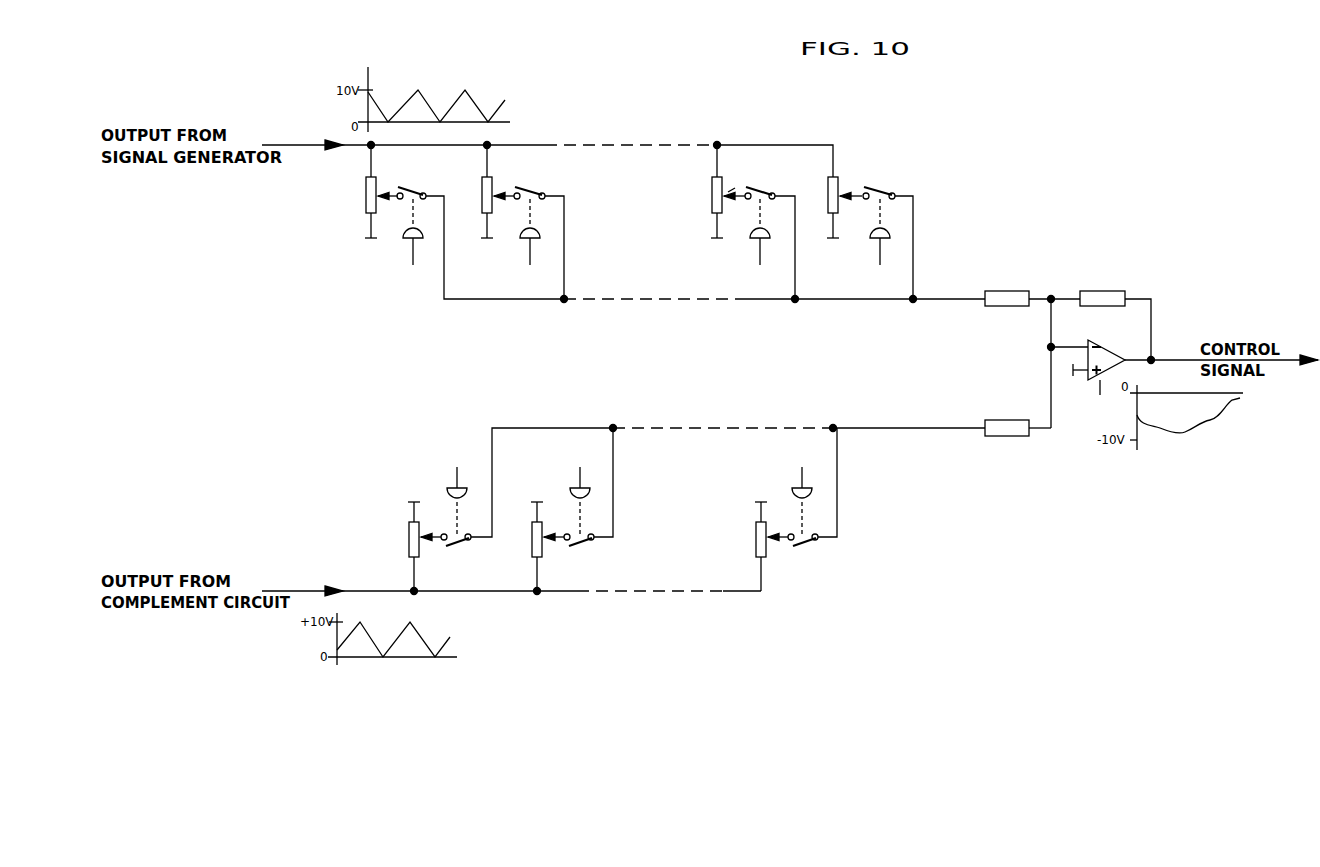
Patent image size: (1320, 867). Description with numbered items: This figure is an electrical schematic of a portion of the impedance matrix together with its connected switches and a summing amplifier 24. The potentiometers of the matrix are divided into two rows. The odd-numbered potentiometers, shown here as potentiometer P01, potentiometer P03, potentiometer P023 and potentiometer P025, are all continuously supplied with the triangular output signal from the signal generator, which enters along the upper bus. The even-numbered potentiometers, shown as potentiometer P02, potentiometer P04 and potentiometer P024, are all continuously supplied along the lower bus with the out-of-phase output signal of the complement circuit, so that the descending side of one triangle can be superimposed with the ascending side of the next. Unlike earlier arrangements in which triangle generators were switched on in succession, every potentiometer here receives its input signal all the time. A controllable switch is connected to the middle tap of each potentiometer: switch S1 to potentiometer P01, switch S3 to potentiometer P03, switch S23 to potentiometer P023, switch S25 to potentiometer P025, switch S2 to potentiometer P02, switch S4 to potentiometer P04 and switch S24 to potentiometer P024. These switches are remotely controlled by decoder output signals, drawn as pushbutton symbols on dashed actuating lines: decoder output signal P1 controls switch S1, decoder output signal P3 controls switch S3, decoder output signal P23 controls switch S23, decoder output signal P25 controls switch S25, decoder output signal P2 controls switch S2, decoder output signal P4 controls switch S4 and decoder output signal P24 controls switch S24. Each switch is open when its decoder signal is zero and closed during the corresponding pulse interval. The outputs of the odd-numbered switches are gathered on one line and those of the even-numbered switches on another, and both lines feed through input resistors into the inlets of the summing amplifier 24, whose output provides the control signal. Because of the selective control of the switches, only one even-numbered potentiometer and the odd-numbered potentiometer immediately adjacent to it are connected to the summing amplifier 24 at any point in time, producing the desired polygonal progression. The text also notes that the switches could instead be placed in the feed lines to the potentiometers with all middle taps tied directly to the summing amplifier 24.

The summing amplifier 24 is at (1184, 381).
The potentiometer P01 is at (358, 192).
The potentiometer P03 is at (480, 192).
The potentiometer P023 is at (712, 191).
The potentiometer P025 is at (828, 208).
The potentiometer P02 is at (408, 546).
The potentiometer P04 is at (530, 546).
The potentiometer P024 is at (755, 546).
The controllable switch S1 is at (412, 183).
The controllable switch S3 is at (529, 183).
The controllable switch S23 is at (757, 183).
The controllable switch S25 is at (883, 183).
The controllable switch S2 is at (456, 551).
The controllable switch S4 is at (581, 551).
The controllable switch S24 is at (808, 551).
The decoder output signal P1 is at (413, 246).
The decoder output signal P3 is at (530, 246).
The decoder output signal P23 is at (764, 246).
The decoder output signal P25 is at (883, 246).
The decoder output signal P2 is at (456, 488).
The decoder output signal P4 is at (581, 488).
The decoder output signal P24 is at (807, 488).